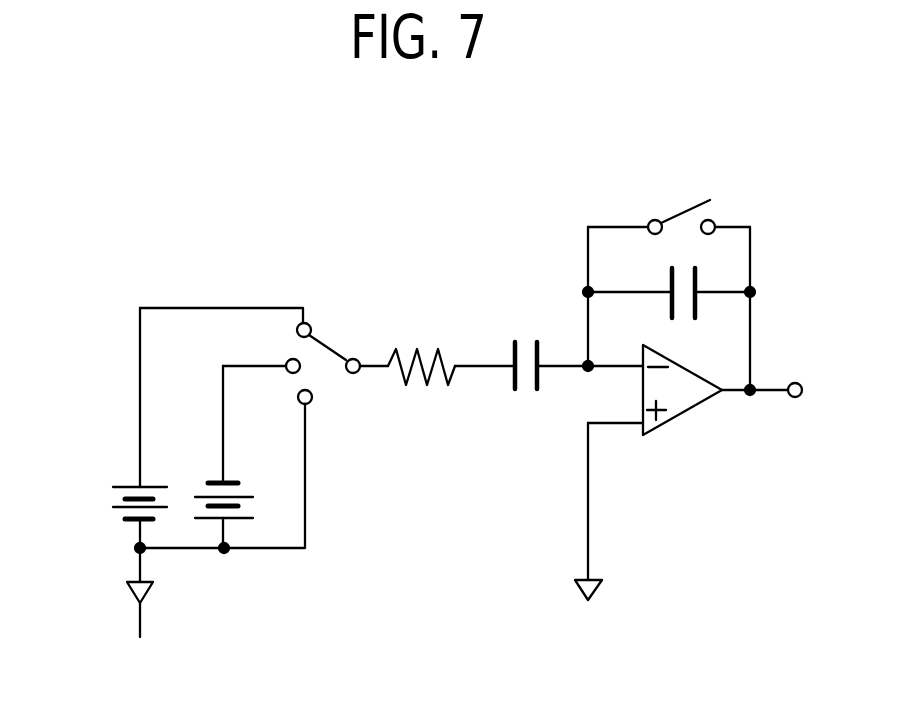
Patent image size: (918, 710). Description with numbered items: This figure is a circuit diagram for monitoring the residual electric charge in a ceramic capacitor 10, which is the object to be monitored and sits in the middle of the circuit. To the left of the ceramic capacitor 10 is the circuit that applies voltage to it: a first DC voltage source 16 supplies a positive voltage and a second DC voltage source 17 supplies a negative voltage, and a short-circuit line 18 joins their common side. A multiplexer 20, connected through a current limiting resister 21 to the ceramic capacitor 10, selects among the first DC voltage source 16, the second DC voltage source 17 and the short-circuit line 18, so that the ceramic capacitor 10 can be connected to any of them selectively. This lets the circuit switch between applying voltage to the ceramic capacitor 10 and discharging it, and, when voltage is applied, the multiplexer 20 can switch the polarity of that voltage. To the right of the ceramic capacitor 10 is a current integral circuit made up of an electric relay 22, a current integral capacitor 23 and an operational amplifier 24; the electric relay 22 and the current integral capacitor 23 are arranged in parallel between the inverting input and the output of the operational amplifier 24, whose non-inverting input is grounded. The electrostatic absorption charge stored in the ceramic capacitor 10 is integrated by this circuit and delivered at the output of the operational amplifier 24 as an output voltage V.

The ceramic capacitor 10 is at (546, 340).
The first DC voltage source 16 is at (116, 487).
The second DC voltage source 17 is at (230, 483).
The short-circuit line 18 is at (305, 515).
The multiplexer 20 is at (320, 343).
The current limiting resister 21 is at (428, 340).
The electric relay 22 is at (688, 203).
The current integral capacitor 23 is at (700, 275).
The operational amplifier 24 is at (683, 414).